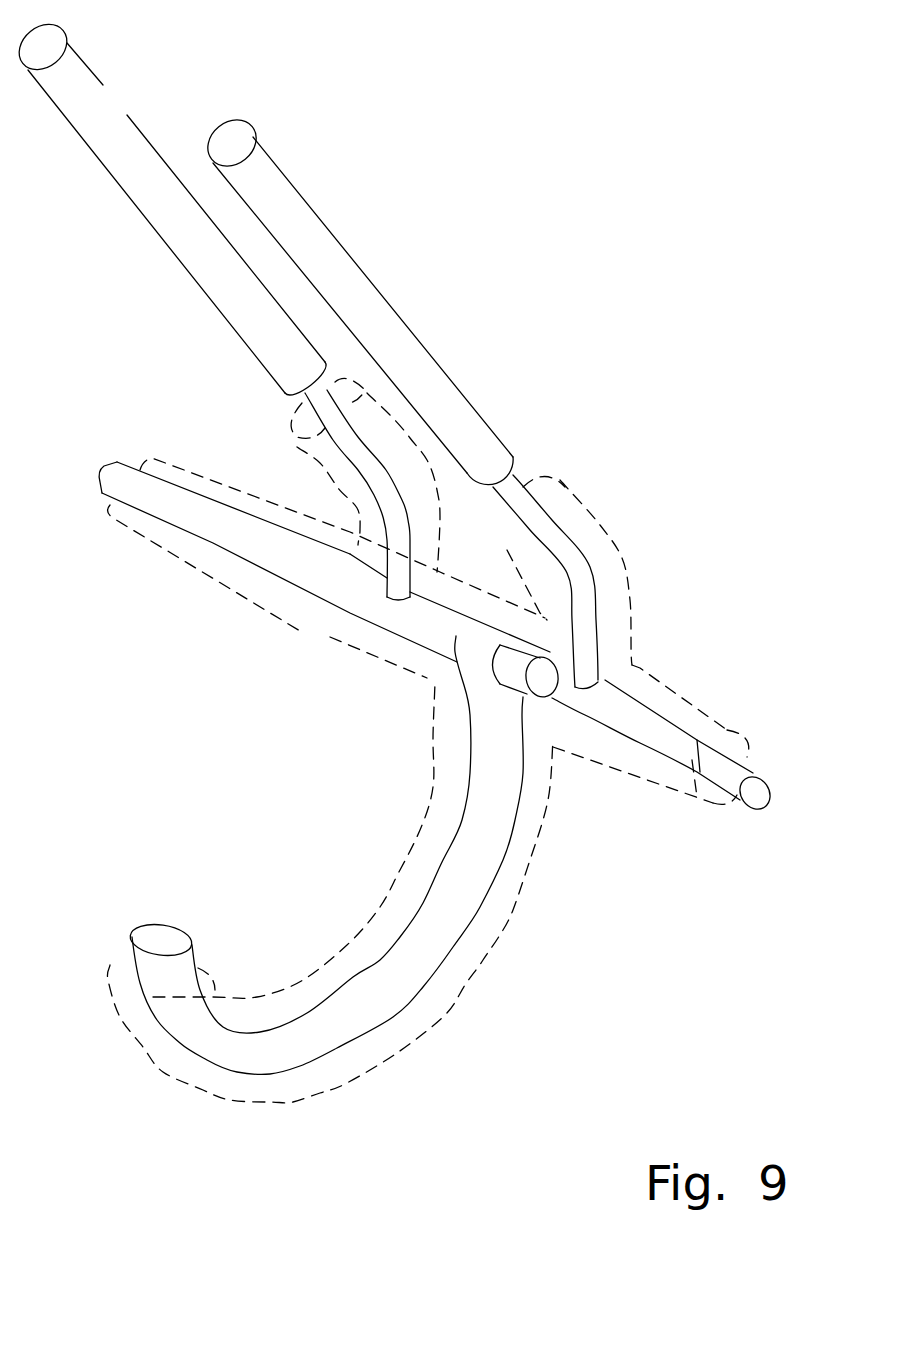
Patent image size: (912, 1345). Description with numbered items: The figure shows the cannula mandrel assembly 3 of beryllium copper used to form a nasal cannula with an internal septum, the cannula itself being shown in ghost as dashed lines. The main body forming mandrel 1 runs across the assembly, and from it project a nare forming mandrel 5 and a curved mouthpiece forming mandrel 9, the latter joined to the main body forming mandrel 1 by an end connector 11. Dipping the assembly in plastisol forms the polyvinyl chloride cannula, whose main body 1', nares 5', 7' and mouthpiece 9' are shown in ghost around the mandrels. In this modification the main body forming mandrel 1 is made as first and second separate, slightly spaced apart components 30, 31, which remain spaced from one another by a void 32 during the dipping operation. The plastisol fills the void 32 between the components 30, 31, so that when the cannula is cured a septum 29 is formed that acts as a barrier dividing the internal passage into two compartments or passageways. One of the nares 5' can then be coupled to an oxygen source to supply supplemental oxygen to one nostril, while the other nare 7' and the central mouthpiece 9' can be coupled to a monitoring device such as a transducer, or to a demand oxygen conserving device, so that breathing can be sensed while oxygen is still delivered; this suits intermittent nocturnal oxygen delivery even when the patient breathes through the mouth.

The cannula mandrel assembly 3 is at (603, 445).
The nare forming mandrel 5 is at (398, 398).
The nare 5' is at (628, 612).
The nare 7' is at (250, 452).
The main body forming mandrel 1 is at (459, 638).
The main body 1' is at (326, 620).
The second component of main body forming mandrel 31 is at (275, 555).
The septum 29 is at (420, 750).
The void 32 is at (375, 813).
The end connector 11 is at (468, 663).
The mouthpiece forming mandrel 9 is at (375, 855).
The mouthpiece 9' is at (336, 895).
The first component of main body forming mandrel 30 is at (650, 743).